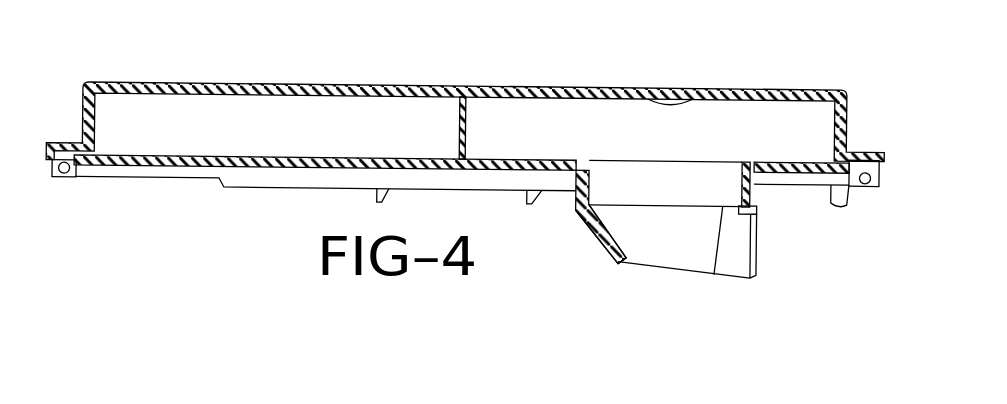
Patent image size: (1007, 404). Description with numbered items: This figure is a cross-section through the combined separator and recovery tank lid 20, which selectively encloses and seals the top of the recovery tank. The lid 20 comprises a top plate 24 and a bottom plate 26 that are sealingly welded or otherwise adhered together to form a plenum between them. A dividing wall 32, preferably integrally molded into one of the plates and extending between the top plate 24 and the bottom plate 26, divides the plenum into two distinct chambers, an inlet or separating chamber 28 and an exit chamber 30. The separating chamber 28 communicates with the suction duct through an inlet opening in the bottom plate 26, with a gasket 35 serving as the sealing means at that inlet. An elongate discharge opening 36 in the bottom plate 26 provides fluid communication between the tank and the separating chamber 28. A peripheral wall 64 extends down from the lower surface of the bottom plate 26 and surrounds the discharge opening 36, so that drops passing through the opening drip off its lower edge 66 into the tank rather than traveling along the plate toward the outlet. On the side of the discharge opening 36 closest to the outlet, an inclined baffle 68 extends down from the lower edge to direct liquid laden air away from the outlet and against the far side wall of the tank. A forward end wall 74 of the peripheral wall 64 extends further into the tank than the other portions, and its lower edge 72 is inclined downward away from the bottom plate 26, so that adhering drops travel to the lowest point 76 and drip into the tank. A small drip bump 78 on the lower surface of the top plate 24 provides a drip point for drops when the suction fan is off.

The combined separator and recovery tank lid 20 is at (171, 52).
The top plate 24 is at (588, 88).
The bottom plate 26 is at (253, 165).
The separating chamber 28 is at (798, 116).
The exit chamber 30 is at (323, 110).
The dividing wall 32 is at (459, 129).
The gasket 35 is at (64, 176).
The discharge opening 36 is at (698, 178).
The peripheral wall 64 is at (757, 205).
The lower edge 66 is at (602, 262).
The inclined baffle 68 is at (591, 236).
The lower edge of forward end wall 72 is at (640, 268).
The forward end wall 74 is at (688, 256).
The lowest point 76 is at (752, 280).
The drip bump 78 is at (665, 107).